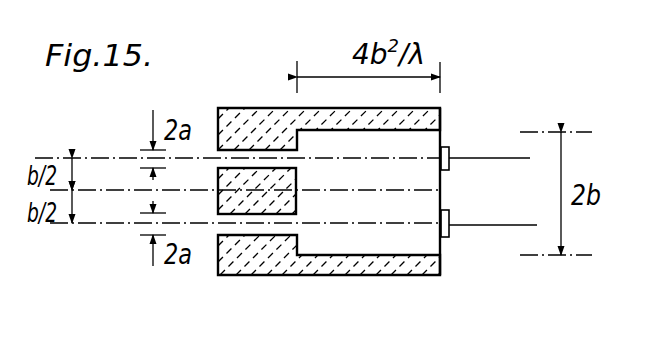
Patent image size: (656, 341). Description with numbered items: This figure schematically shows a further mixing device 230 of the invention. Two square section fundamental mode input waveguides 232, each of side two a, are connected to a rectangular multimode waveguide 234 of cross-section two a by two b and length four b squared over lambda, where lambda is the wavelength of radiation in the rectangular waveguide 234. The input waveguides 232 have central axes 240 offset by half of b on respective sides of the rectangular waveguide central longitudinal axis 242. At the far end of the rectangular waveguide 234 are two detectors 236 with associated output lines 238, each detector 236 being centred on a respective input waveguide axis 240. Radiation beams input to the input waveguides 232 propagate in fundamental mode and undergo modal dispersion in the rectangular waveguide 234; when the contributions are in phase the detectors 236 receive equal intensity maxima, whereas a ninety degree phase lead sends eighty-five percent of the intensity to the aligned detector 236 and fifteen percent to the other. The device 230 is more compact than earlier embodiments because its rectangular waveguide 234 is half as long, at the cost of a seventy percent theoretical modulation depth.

The mixing device 230 is at (259, 96).
The fundamental mode input waveguides 232 is at (218, 152).
The rectangular multimode waveguide 234 is at (382, 210).
The detectors 236 is at (450, 150).
The output lines 238 is at (520, 158).
The central axes of the input waveguides 240 is at (97, 143).
The rectangular waveguide central longitudinal axis 242 is at (333, 191).